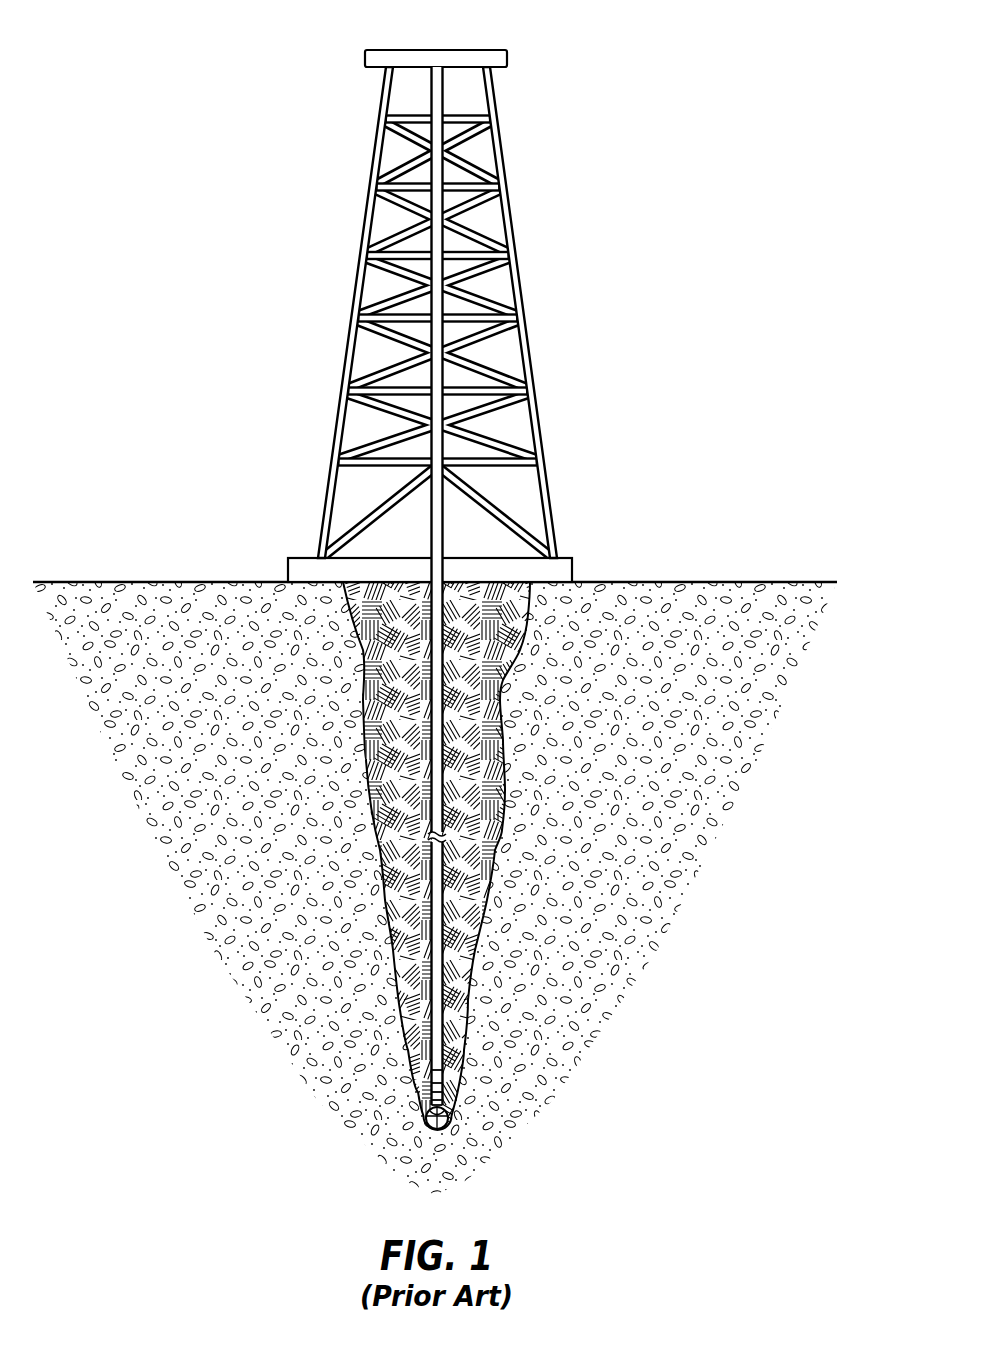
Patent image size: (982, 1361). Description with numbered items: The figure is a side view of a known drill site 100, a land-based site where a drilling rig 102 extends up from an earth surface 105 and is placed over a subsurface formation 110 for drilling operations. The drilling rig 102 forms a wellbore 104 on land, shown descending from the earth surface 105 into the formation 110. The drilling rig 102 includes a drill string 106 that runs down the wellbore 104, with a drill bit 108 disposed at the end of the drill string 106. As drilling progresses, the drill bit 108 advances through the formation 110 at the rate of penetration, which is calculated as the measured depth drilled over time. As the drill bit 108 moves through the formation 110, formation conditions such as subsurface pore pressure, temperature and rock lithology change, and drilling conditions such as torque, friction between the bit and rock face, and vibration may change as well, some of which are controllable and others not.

The drill site 100 is at (302, 32).
The drilling rig 102 is at (518, 213).
The wellbore 104 is at (494, 658).
The earth surface 105 is at (130, 580).
The drill string 106 is at (444, 765).
The drill bit 108 is at (452, 1092).
The formation 110 is at (272, 802).